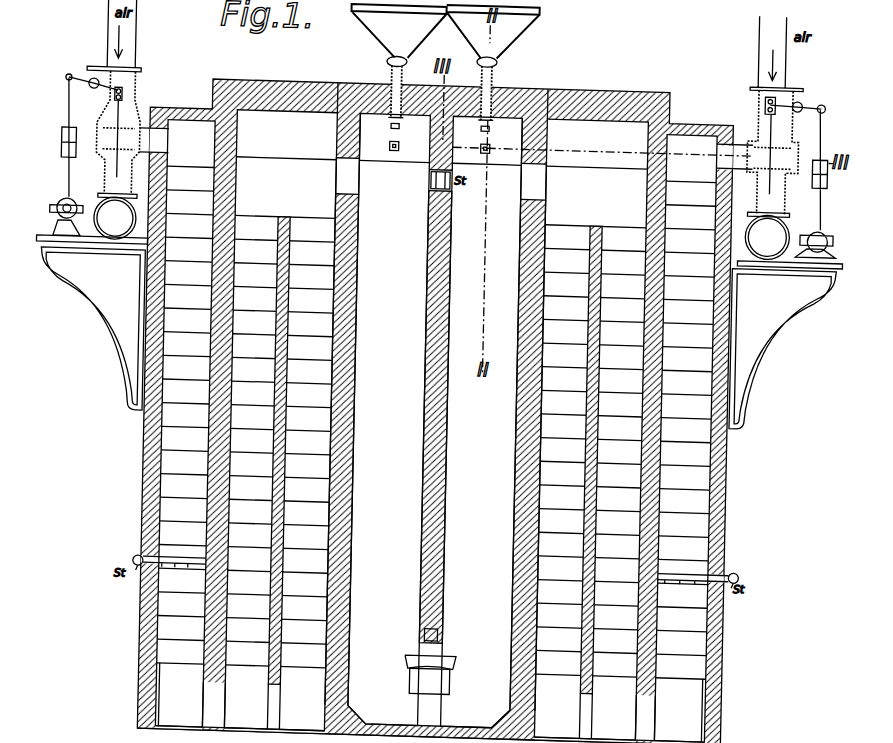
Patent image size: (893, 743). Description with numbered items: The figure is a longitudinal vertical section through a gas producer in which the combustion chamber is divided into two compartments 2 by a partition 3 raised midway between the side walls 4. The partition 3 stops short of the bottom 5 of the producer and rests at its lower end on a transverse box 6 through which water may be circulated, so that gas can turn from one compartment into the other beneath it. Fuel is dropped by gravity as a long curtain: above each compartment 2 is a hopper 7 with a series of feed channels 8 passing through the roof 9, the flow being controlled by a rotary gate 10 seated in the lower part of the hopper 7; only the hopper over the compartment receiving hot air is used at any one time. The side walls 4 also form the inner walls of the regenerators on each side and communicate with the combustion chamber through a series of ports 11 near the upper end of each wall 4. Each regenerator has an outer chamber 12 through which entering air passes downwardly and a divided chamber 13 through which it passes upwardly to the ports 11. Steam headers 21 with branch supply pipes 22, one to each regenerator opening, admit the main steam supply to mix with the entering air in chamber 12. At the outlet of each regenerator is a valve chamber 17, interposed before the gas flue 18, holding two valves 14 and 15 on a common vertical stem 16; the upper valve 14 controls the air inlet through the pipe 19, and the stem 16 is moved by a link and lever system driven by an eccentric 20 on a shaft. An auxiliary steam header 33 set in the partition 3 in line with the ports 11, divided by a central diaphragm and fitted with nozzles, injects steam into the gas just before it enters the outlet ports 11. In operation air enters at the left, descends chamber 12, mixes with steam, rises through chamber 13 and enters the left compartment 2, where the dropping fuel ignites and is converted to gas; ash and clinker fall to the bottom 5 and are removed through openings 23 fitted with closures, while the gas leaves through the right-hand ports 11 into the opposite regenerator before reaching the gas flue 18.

The combustion chamber compartment 2 is at (435, 420).
The partition 3 is at (449, 513).
The side wall 4 is at (359, 409).
The bottom 5 is at (439, 719).
The transverse box 6 is at (450, 627).
The hopper 7 is at (381, 32).
The feed channel 8 is at (391, 67).
The roof 9 is at (431, 134).
The rotary gate 10 is at (402, 54).
The port 11 is at (339, 176).
The regenerator chamber 12 is at (436, 431).
The divided regenerator chamber 13 is at (436, 425).
The upper valve 14 is at (103, 128).
The lower valve 15 is at (110, 163).
The vertical stem 16 is at (133, 119).
The valve chamber 17 is at (103, 146).
The gas flue 18 is at (441, 227).
The air inlet pipe 19 is at (98, 68).
The eccentric 20 is at (64, 206).
The steam supply header 21 is at (142, 560).
The branch supply pipe 22 is at (195, 554).
The ash removal opening 23 is at (430, 675).
The auxiliary steam supply header 33 is at (432, 174).